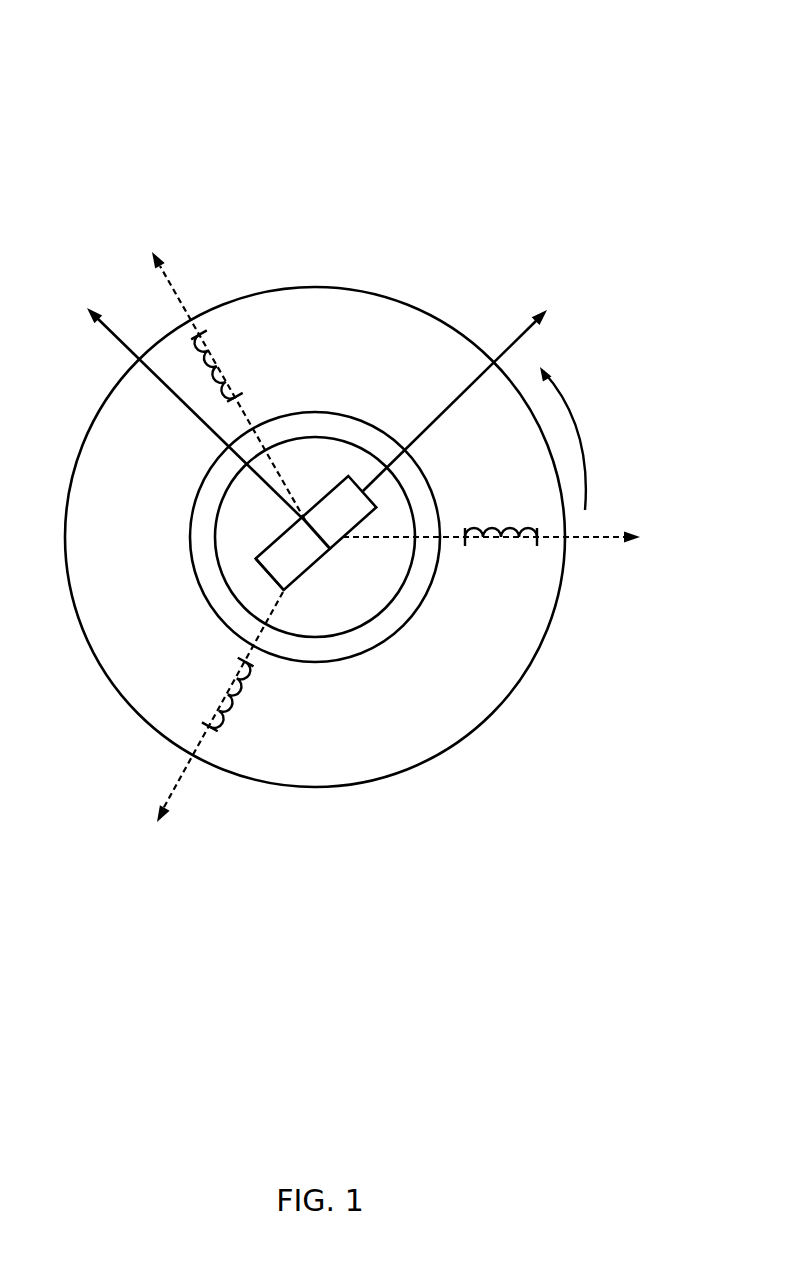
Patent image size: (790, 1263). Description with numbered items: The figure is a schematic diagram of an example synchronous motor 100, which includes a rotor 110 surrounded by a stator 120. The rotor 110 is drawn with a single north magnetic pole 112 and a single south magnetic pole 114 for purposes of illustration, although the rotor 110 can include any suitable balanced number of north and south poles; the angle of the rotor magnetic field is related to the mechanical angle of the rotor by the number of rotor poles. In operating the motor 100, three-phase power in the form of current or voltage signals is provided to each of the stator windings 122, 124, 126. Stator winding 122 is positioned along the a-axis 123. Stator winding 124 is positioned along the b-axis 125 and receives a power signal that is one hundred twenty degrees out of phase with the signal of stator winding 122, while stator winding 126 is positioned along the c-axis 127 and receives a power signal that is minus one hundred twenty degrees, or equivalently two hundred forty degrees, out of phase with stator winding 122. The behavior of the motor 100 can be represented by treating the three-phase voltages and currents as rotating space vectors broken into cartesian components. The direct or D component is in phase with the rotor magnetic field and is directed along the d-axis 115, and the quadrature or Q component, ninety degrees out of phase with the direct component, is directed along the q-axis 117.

The synchronous motor 100 is at (145, 86).
The rotor 110 is at (335, 439).
The north magnetic pole 112 is at (360, 523).
The south magnetic pole 114 is at (263, 549).
The d-axis 115 is at (507, 340).
The q-axis 117 is at (107, 336).
The stator 120 is at (383, 294).
The stator winding 122 is at (489, 521).
The a-axis 123 is at (596, 540).
The stator winding 124 is at (234, 389).
The b-axis 125 is at (184, 291).
The stator winding 126 is at (247, 697).
The c-axis 127 is at (172, 790).